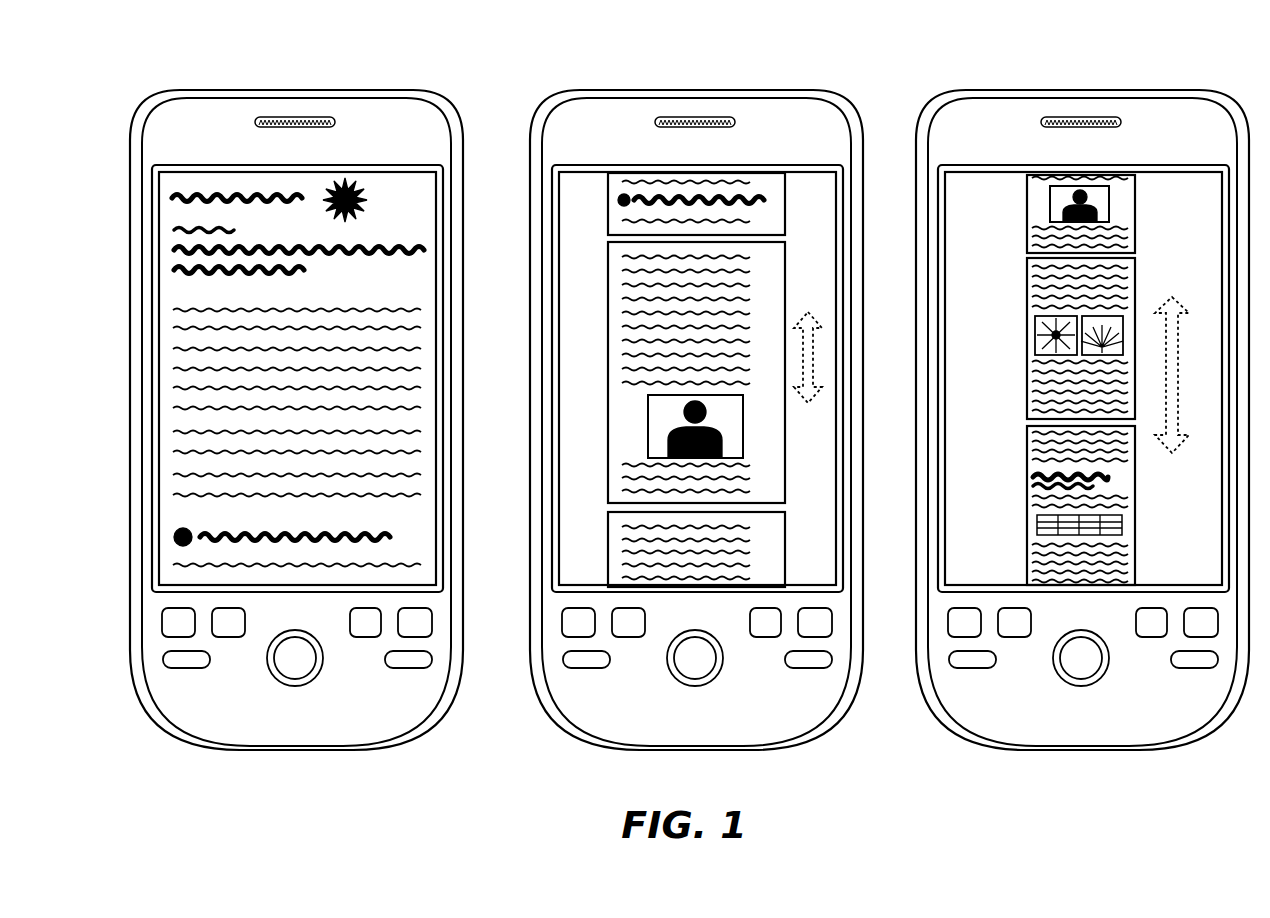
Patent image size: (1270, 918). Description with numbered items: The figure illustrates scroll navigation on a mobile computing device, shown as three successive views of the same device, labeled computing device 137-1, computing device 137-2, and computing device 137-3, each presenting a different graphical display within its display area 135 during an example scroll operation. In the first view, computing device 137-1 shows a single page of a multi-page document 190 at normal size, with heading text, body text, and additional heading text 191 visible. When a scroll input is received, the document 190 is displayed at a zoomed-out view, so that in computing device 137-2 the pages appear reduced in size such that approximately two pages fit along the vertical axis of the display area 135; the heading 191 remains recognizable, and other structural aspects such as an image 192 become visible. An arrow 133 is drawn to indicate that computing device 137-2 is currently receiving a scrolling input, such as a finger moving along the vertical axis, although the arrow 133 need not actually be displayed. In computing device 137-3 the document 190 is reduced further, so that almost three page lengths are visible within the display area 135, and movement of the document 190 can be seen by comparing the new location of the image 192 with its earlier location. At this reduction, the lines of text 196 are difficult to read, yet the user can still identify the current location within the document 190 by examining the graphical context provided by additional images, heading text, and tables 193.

The computing device (first view) 137-1 is at (297, 90).
The computing device (second view) 137-2 is at (692, 90).
The computing device (third view) 137-3 is at (1082, 90).
The display area 135 is at (556, 208).
The multi-page document 190 is at (386, 220).
The heading text 191 is at (613, 198).
The image 192 is at (1050, 197).
The arrow 133 is at (813, 315).
The tables 193 is at (1037, 522).
The lines of text 196 is at (1020, 262).